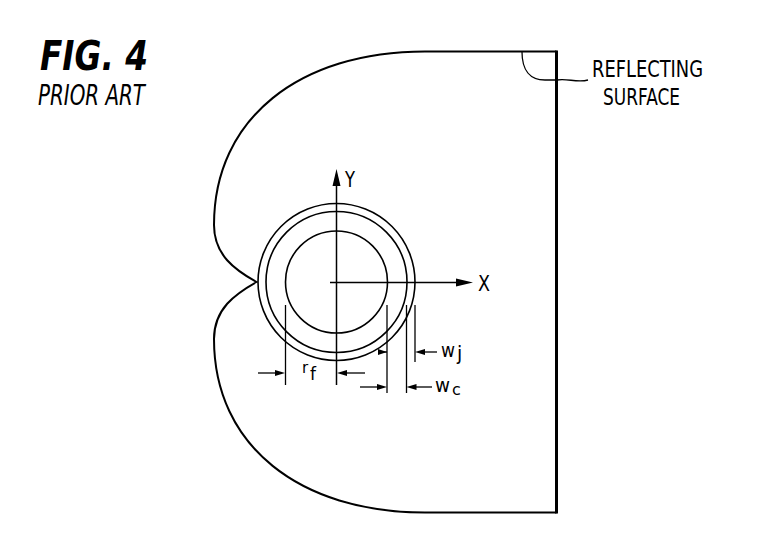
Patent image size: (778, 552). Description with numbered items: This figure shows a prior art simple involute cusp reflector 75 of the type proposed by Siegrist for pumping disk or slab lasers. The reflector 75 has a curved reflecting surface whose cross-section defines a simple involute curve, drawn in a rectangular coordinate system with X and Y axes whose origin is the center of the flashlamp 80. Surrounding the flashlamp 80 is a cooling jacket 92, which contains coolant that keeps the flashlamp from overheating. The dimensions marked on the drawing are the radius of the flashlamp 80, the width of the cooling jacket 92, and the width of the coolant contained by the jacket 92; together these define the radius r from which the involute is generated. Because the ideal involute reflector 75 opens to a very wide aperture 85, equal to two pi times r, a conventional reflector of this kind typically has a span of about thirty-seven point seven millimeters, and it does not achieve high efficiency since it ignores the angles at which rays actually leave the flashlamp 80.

The reflector 75 is at (206, 166).
The flashlamp 80 is at (424, 252).
The aperture 85 is at (557, 182).
The cooling jacket 92 is at (392, 232).